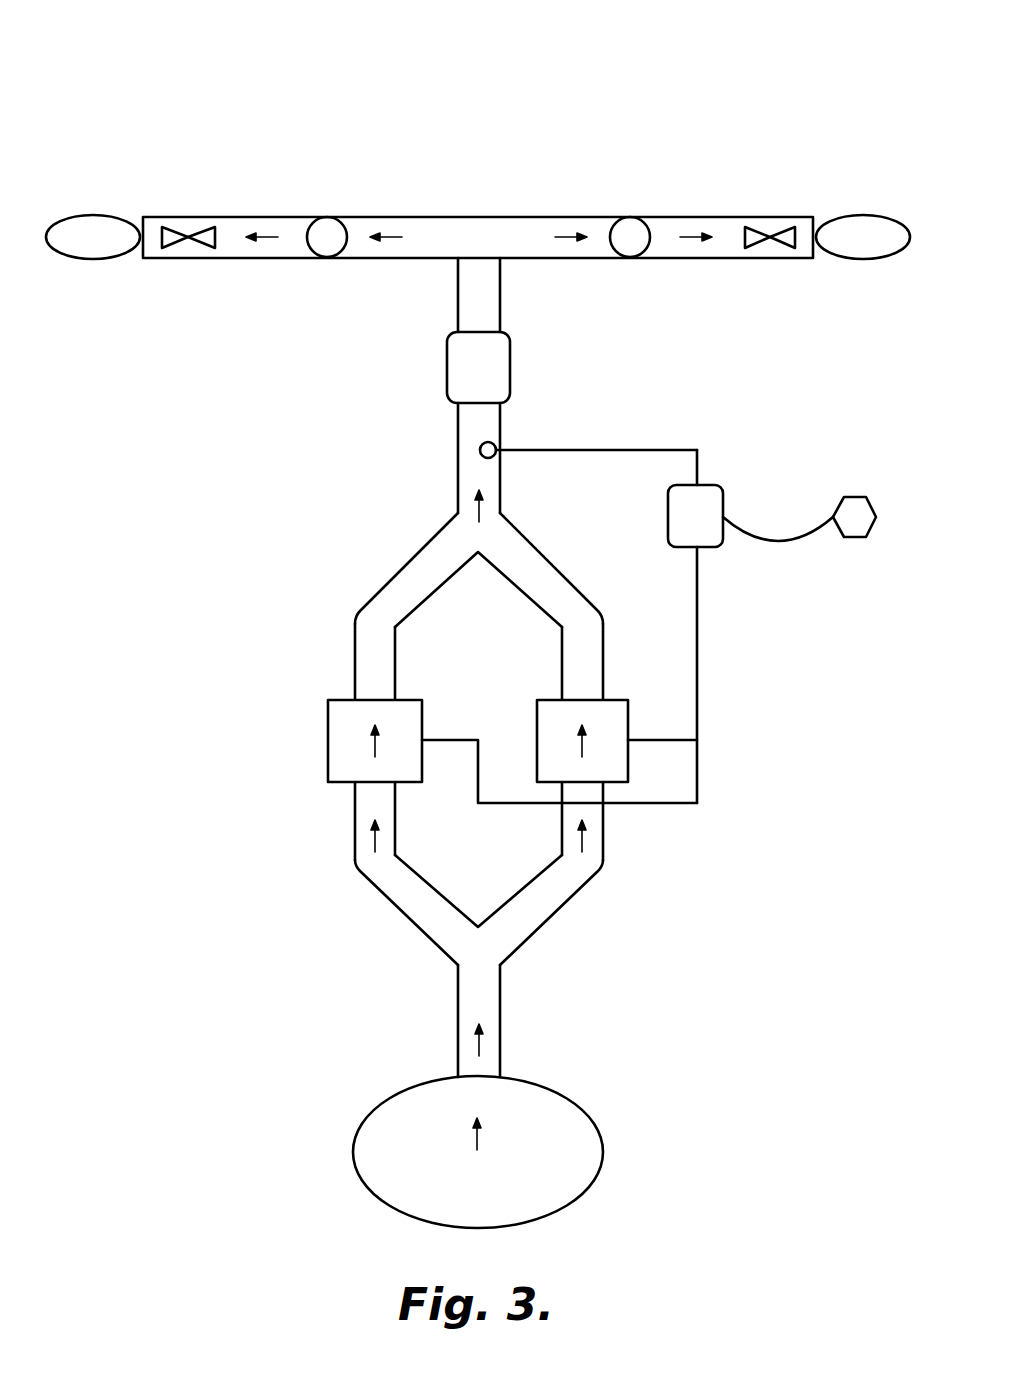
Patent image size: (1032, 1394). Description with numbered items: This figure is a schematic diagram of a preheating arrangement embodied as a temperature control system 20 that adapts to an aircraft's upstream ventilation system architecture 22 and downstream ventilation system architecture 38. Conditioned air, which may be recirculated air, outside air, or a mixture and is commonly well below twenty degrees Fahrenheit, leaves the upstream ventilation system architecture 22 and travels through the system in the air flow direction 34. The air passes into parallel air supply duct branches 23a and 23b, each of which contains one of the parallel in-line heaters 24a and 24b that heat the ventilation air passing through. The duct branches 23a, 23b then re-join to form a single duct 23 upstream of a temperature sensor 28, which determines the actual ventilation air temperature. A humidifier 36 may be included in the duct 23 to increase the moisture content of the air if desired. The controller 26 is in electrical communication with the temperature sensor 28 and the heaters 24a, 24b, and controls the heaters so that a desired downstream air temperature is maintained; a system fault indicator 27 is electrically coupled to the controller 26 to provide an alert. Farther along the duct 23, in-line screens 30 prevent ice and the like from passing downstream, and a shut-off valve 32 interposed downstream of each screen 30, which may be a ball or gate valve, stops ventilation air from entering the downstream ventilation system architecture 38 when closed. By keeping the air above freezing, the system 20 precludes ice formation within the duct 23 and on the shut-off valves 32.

The temperature control system 20 is at (225, 80).
The upstream ventilation system architecture 22 is at (600, 1130).
The duct 23 is at (680, 258).
The air supply duct branch 23a is at (355, 870).
The air supply duct branch 23b is at (603, 870).
The heater 24a is at (328, 740).
The heater 24b is at (578, 752).
The controller 26 is at (726, 485).
The system fault indicator 27 is at (872, 502).
The temperature sensor 28 is at (496, 445).
The in-line screen 30 is at (320, 218).
The shut-off valve 32 is at (186, 234).
The air flow direction 34 is at (395, 233).
The humidifier 36 is at (510, 370).
The downstream ventilation system architecture 38 is at (93, 215).